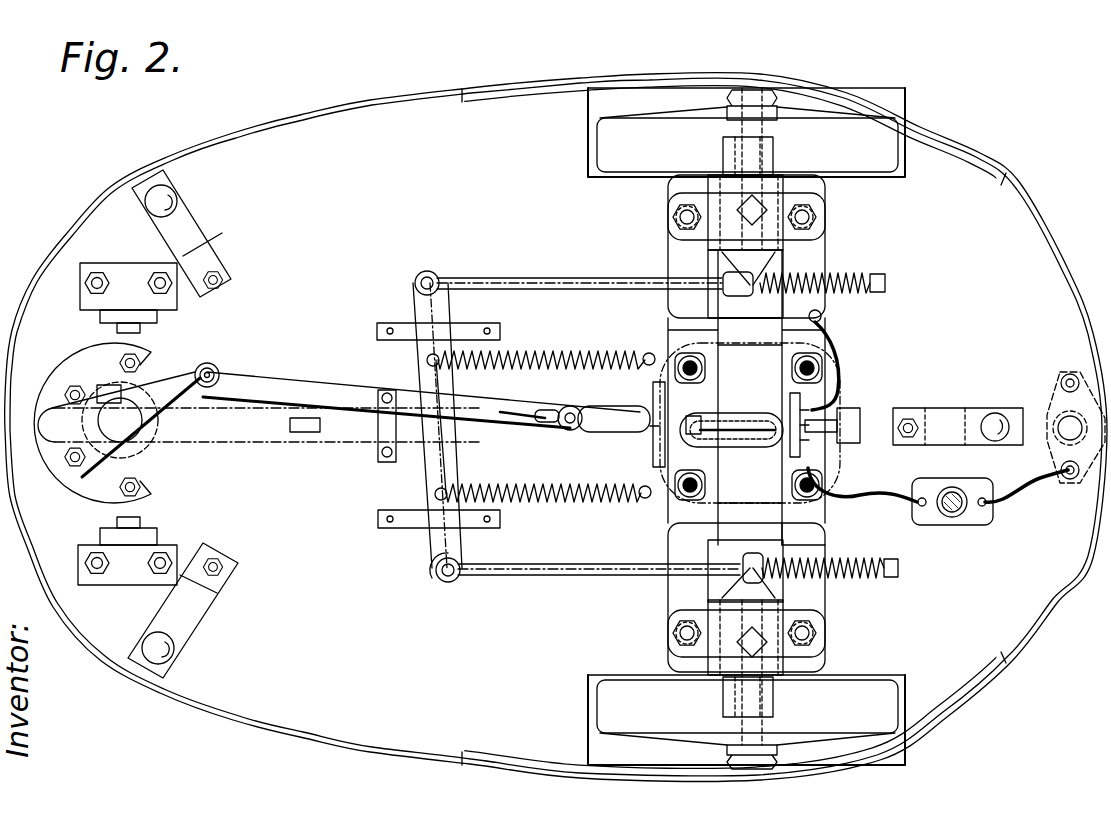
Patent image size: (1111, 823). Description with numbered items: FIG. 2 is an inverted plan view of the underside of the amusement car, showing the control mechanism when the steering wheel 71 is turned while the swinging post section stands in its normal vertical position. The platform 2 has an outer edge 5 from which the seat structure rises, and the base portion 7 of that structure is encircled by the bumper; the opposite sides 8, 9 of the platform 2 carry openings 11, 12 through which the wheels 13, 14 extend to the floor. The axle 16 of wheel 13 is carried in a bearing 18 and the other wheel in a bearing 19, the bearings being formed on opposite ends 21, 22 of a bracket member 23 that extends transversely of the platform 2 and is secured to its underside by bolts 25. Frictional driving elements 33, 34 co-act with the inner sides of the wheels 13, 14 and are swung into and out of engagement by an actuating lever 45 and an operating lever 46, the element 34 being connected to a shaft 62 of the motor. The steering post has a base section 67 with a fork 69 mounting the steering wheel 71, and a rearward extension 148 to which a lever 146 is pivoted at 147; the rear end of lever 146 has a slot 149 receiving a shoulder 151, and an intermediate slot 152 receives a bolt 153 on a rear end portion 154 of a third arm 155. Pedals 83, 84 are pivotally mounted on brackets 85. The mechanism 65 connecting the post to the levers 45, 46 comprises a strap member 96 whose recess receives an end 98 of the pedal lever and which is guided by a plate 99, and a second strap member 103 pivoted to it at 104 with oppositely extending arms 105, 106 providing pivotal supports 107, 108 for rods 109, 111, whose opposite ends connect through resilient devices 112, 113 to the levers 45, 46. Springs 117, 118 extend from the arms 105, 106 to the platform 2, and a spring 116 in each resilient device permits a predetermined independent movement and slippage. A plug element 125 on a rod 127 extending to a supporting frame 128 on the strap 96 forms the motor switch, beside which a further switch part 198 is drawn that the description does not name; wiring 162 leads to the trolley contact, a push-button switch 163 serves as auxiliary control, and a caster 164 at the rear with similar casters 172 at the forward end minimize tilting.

The platform 2 is at (379, 140).
The outer edge 5 is at (1087, 320).
The base portion 7 is at (1008, 195).
The side of platform 8 is at (918, 715).
The side of platform 9 is at (940, 152).
The opening 11 is at (905, 686).
The opening 12 is at (903, 172).
The wheel 13 is at (856, 690).
The wheel 14 is at (746, 132).
The axle 16 is at (770, 722).
The bearing 18 is at (780, 632).
The bearing 19 is at (766, 190).
The end of bracket member 21 is at (822, 655).
The end of bracket member 22 is at (822, 191).
The bracket member 23 is at (820, 251).
The bolts 25 is at (675, 628).
The frictional driving element 33 is at (775, 702).
The driving friction element 34 is at (722, 155).
The actuating lever 45 is at (722, 560).
The operating lever 46 is at (722, 272).
The shaft 62 is at (756, 312).
The mechanism 65 is at (421, 425).
The base section 67 is at (86, 378).
The fork 69 is at (160, 485).
The steering wheel 71 is at (150, 432).
The pedal 83 is at (150, 326).
The pedal 84 is at (150, 530).
The brackets 85 is at (82, 308).
The strap member 96 is at (356, 437).
The end of lever 98 is at (306, 433).
The plate 99 is at (386, 462).
The second strap member 103 is at (452, 455).
The pivot 104 is at (500, 426).
The arm 105 is at (440, 535).
The arm 106 is at (412, 340).
The pivotal support 107 is at (450, 582).
The pivotal support 108 is at (439, 264).
The rod 109 is at (558, 572).
The rod 111 is at (602, 278).
The resilient device 112 is at (870, 566).
The resilient device 113 is at (858, 290).
The spring 116 is at (826, 530).
The spring 117 is at (775, 95).
The spring 118 is at (590, 355).
The plug element 125 is at (836, 426).
The rod 127 is at (752, 416).
The supporting frame 128 is at (693, 414).
The lever 146 is at (300, 374).
The pivot 147 is at (212, 366).
The rearward extension 148 is at (165, 375).
The slot 149 is at (738, 447).
The shoulder 151 is at (722, 420).
The second slot 152 is at (620, 440).
The bolt 153 is at (574, 430).
The rear end portion 154 is at (612, 404).
The third arm 155 is at (520, 406).
The wiring 162 is at (853, 496).
The manually operable switch 163 is at (950, 487).
The caster 164 is at (980, 406).
The casters 172 is at (205, 232).
The switch 198 is at (826, 442).